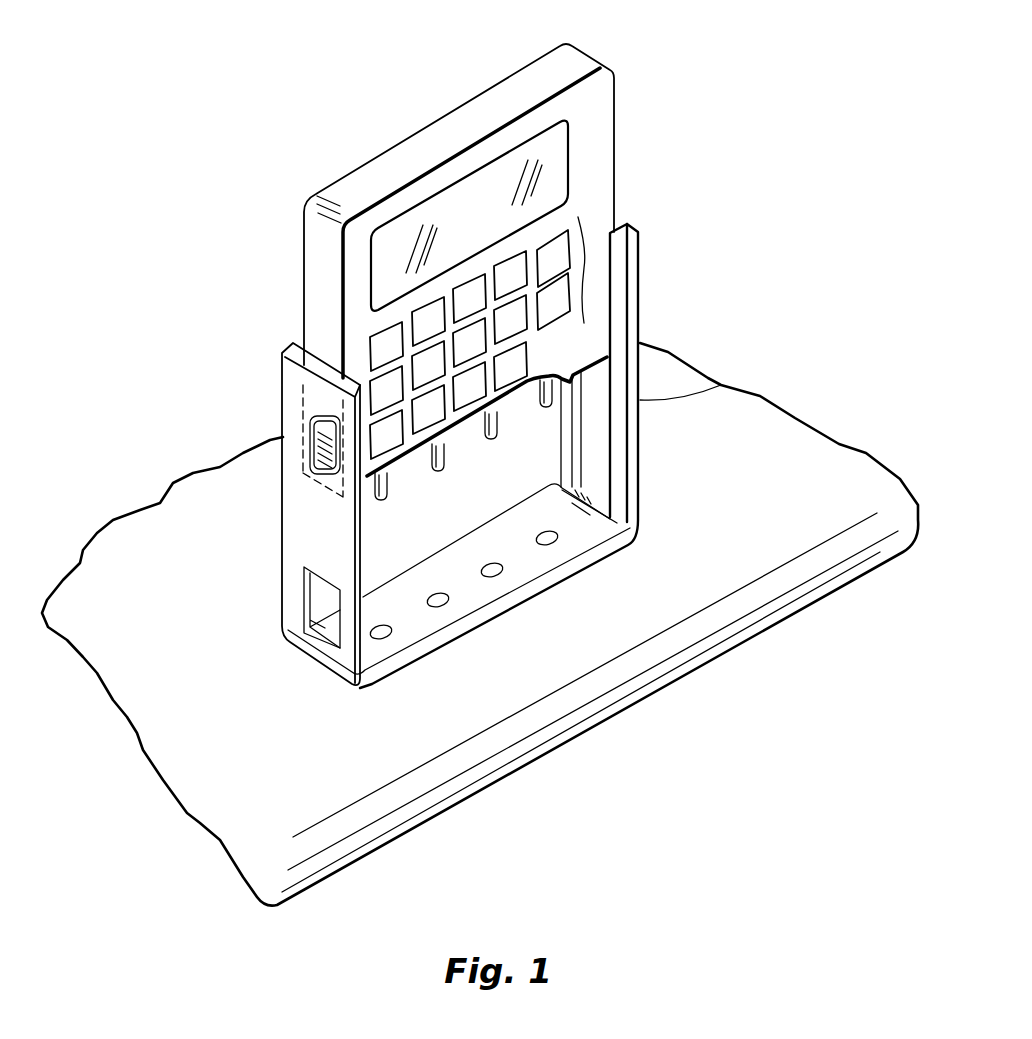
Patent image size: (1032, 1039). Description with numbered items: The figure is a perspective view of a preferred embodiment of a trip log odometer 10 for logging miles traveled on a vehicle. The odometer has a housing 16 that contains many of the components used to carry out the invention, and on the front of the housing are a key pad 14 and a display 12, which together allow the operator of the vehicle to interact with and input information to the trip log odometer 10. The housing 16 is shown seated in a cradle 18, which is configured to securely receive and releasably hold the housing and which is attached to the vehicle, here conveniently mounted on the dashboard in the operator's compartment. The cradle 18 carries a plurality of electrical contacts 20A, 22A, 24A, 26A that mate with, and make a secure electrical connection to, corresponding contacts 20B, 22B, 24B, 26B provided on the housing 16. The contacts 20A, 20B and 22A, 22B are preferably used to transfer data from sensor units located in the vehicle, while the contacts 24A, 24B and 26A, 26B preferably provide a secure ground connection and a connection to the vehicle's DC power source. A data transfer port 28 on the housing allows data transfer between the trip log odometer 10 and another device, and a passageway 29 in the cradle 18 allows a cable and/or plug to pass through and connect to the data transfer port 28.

The trip log odometer 10 is at (565, 262).
The display 12 is at (463, 220).
The key pad 14 is at (586, 262).
The housing 16 is at (575, 45).
The cradle 18 is at (424, 472).
The electrical contact 20A is at (558, 537).
The electrical contact 22A is at (503, 570).
The electrical contact 24A is at (449, 602).
The electrical contact 26A is at (392, 633).
The electrical contact 20B is at (546, 408).
The electrical contact 22B is at (491, 440).
The electrical contact 24B is at (438, 472).
The electrical contact 26B is at (381, 501).
The data transfer port 28 is at (283, 421).
The passageway 29 is at (283, 645).